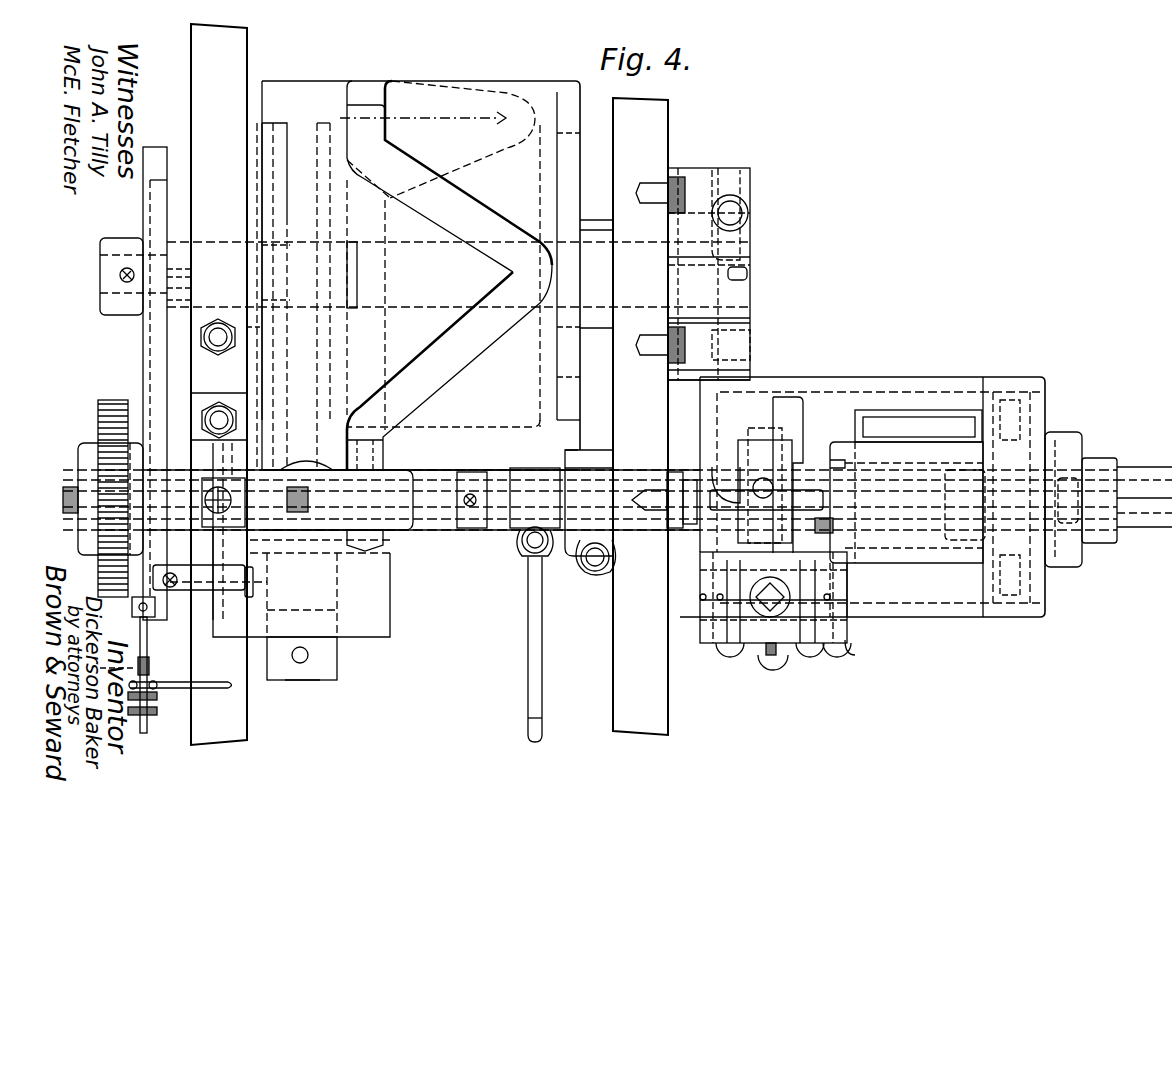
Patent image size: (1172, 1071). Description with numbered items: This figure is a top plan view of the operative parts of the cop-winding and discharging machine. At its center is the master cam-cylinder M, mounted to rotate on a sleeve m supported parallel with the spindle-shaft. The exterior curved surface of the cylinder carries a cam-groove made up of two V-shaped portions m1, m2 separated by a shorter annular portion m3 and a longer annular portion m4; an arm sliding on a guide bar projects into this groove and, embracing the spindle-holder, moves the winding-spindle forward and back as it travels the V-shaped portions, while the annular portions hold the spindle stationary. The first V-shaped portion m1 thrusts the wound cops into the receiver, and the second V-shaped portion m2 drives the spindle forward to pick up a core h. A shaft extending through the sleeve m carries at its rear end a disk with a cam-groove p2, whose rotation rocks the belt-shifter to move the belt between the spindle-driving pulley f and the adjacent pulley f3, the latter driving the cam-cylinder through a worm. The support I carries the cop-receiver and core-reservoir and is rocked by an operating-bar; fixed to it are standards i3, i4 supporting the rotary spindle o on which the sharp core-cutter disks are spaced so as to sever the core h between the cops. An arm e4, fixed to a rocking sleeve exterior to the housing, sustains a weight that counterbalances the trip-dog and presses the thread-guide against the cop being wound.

The sleeve m is at (449, 183).
The V-shaped portion of cam-groove m1 is at (449, 367).
The V-shaped portion of cam-groove m2 is at (437, 139).
The shorter annular portion of cam-groove m3 is at (366, 122).
The longer annular portion of cam-groove m4 is at (319, 271).
The master cam-cylinder M is at (458, 275).
The cam-groove p2 is at (147, 316).
The core h is at (905, 430).
The drive-pulley f is at (385, 566).
The drive-pulley f3 is at (387, 632).
The arm e4 is at (535, 642).
The standard i3 is at (713, 645).
The rotary spindle o is at (802, 660).
The standard i4 is at (848, 657).
The support I is at (945, 620).